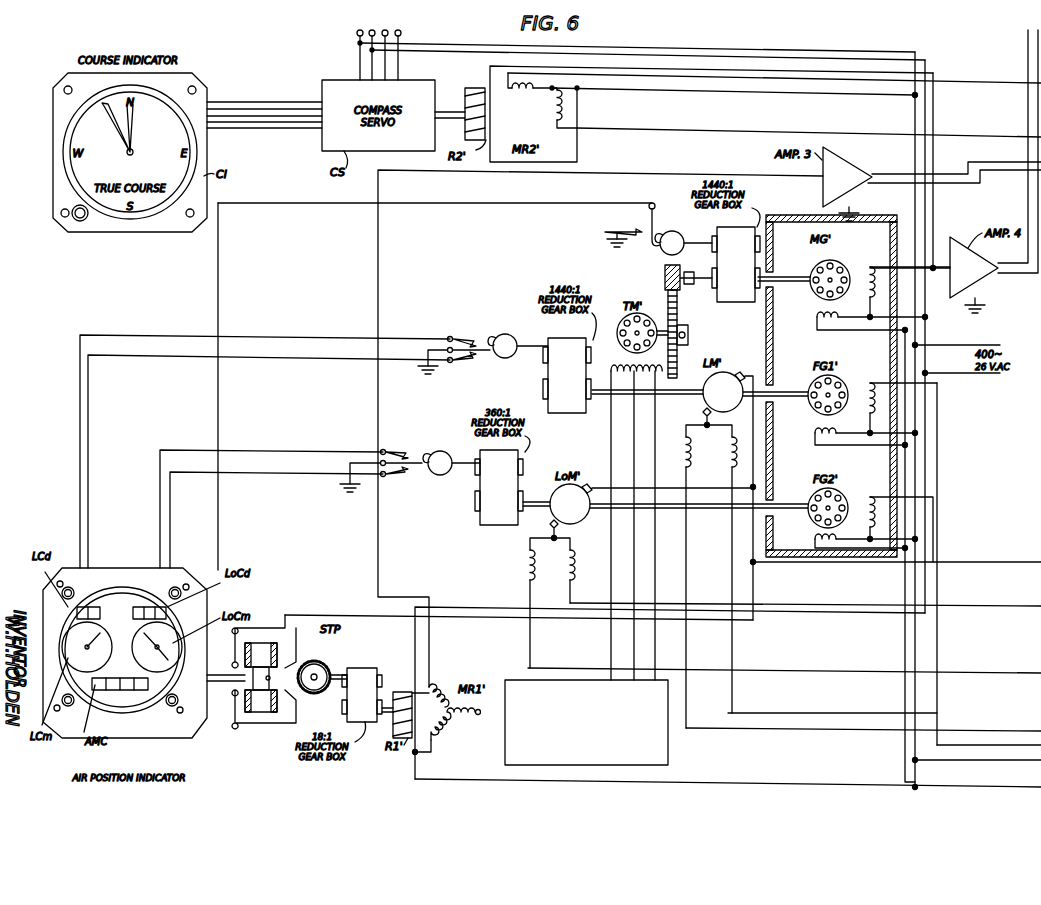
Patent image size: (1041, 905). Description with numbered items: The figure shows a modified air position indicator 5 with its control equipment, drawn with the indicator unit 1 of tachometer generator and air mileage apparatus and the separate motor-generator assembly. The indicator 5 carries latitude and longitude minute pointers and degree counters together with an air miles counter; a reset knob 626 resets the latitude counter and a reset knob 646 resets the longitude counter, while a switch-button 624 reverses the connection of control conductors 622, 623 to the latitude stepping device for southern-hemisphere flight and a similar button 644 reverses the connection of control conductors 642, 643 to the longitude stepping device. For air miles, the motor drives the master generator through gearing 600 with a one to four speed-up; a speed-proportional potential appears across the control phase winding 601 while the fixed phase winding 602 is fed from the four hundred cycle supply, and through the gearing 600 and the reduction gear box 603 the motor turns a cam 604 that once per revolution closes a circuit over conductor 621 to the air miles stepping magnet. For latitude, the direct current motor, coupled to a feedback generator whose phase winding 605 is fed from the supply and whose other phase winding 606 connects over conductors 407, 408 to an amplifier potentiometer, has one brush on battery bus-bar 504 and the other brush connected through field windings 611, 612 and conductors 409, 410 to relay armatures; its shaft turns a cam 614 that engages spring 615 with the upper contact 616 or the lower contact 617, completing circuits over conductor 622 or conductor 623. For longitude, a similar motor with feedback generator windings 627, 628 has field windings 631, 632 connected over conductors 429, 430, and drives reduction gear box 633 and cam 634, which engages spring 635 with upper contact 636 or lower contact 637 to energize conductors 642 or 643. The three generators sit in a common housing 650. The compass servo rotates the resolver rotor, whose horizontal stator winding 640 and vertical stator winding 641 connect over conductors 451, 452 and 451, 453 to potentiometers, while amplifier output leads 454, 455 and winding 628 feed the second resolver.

The tachometer generator and air mileage unit 1 is at (668, 762).
The air position indicator 5 is at (130, 568).
The conductor 407 is at (1002, 780).
The conductor 408 is at (938, 760).
The conductor 409 is at (990, 730).
The conductor 410 is at (945, 714).
The conductor 429 is at (975, 672).
The conductor 430 is at (962, 605).
The conductor 451 is at (915, 110).
The conductor 452 is at (1003, 84).
The conductor 453 is at (1003, 135).
The amplifier output lead 454 is at (977, 156).
The amplifier output lead 455 is at (979, 186).
The battery bus-bar 504 is at (975, 565).
The gearing 600 is at (680, 292).
The control phase winding 601 is at (880, 270).
The fixed phase winding 602 is at (834, 332).
The reduction gear box 603 is at (730, 302).
The cam 604 is at (664, 255).
The phase winding 605 is at (833, 446).
The phase winding 606 is at (864, 390).
The field winding 611 is at (691, 450).
The field winding 612 is at (728, 458).
The cam 614 is at (506, 360).
The spring 615 is at (455, 337).
The upper contact 616 is at (466, 338).
The lower contact 617 is at (456, 368).
The conductor 621 is at (494, 203).
The control conductor 622 is at (80, 386).
The control conductor 623 is at (88, 394).
The switch-button 624 is at (68, 706).
The reset knob 626 is at (80, 568).
The phase winding 627 is at (812, 535).
The phase winding 628 is at (866, 504).
The field winding 631 is at (526, 570).
The field winding 632 is at (577, 562).
The reduction gear box 633 is at (508, 522).
The cam 634 is at (442, 476).
The spring 635 is at (388, 450).
The upper contact 636 is at (399, 450).
The lower contact 637 is at (392, 482).
The horizontal stator winding 640 is at (543, 96).
The vertical stator winding 641 is at (566, 118).
The control conductor 642 is at (160, 501).
The control conductor 643 is at (170, 520).
The button 644 is at (172, 706).
The reset knob 646 is at (170, 568).
The common housing 650 is at (800, 557).